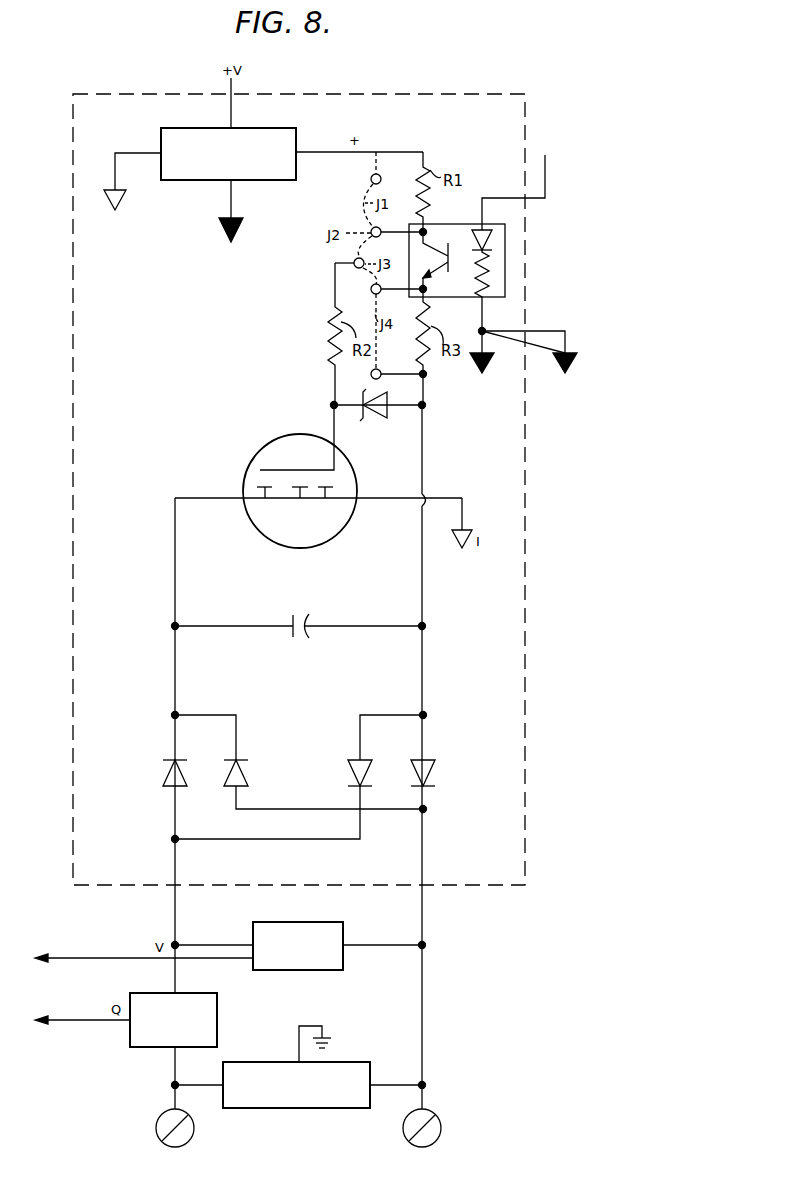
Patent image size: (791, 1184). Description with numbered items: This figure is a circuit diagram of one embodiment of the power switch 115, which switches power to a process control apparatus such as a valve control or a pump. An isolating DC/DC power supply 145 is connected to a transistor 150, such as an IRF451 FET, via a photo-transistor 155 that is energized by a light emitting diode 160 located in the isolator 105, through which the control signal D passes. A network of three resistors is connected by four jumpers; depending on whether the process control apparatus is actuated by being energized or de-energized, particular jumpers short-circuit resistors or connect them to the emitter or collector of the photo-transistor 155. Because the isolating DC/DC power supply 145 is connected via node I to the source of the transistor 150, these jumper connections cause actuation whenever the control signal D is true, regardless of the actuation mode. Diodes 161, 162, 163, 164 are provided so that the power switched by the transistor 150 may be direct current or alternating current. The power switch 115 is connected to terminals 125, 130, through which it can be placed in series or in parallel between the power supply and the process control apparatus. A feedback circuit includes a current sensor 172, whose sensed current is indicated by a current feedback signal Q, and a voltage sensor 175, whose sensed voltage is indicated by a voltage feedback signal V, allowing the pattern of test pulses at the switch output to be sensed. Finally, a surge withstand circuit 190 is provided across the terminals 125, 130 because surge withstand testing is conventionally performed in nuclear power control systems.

The isolator 105 is at (493, 264).
The power switch 115 is at (526, 852).
The terminal 125 is at (186, 1142).
The terminal 130 is at (413, 1143).
The isolating DC/DC power supply 145 is at (250, 181).
The transistor 150 is at (287, 436).
The photo-transistor 155 is at (454, 258).
The light emitting diode 160 is at (478, 226).
The diode 161 is at (186, 773).
The diode 162 is at (246, 770).
The diode 163 is at (366, 768).
The diode 164 is at (434, 768).
The current sensor 172 is at (217, 1015).
The voltage sensor 175 is at (340, 921).
The surge withstand circuit 190 is at (357, 1062).